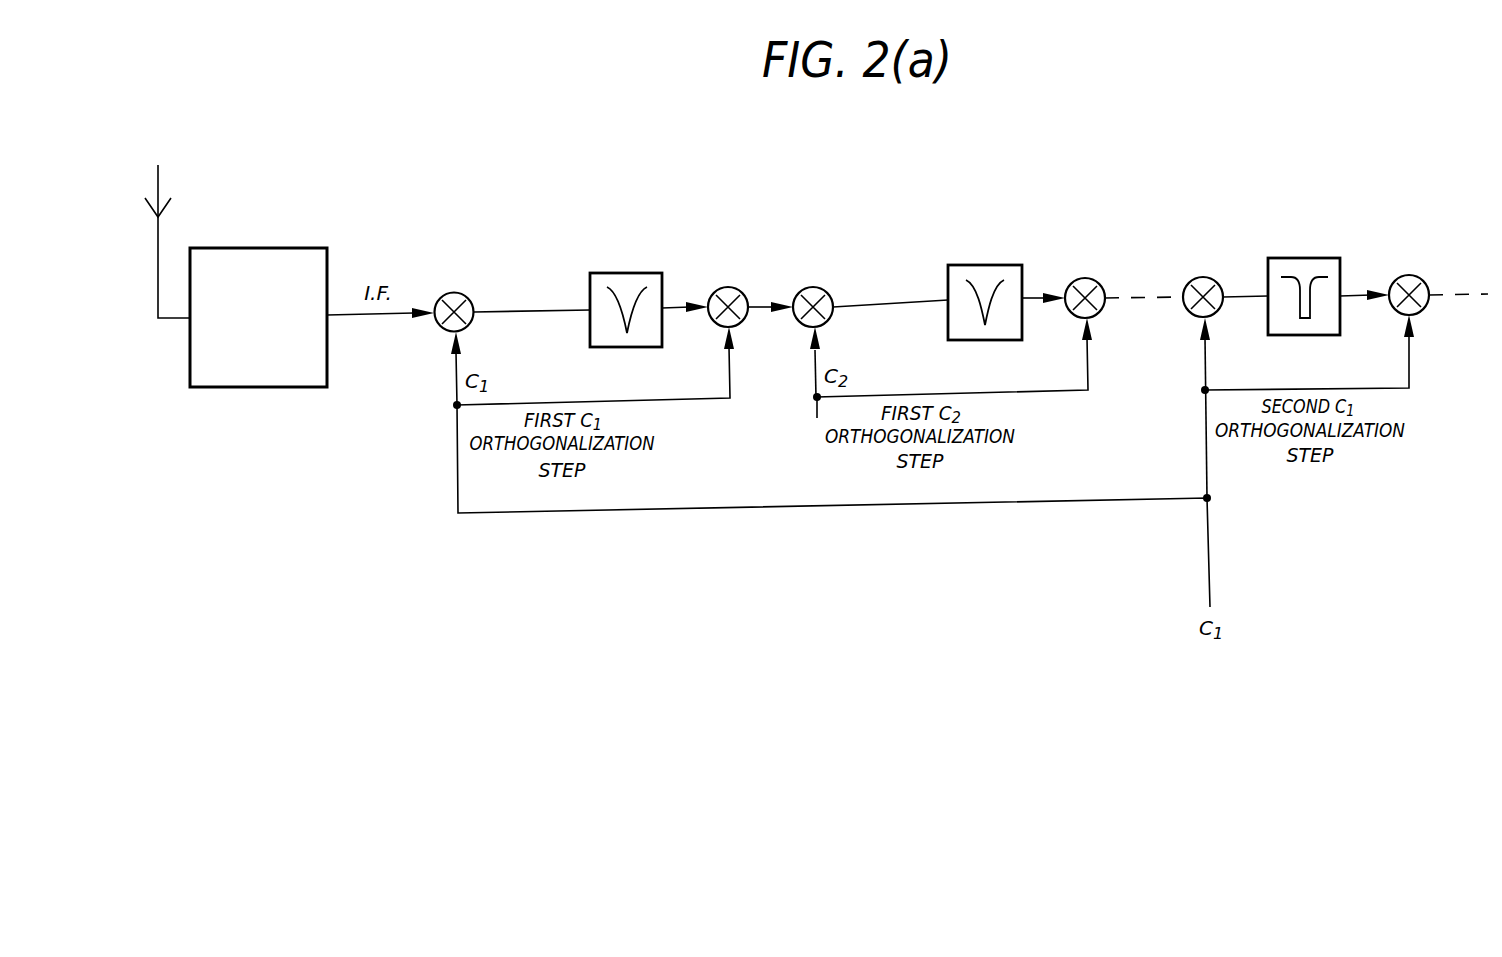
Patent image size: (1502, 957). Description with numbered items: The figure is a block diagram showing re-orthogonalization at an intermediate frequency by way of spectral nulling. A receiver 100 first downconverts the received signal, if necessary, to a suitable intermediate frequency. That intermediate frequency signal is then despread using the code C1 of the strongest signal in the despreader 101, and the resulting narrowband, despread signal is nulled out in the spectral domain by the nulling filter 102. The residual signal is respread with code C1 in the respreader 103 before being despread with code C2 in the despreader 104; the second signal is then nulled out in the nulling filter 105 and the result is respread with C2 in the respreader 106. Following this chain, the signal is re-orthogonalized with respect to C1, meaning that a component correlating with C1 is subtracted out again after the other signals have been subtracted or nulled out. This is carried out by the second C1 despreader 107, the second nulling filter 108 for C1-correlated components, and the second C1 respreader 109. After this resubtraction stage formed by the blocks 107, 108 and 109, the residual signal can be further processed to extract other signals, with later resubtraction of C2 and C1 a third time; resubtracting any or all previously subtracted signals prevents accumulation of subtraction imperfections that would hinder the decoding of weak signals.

The receiver 100 is at (257, 248).
The despreader 101 is at (455, 292).
The nulling filter 102 is at (625, 273).
The respreader 103 is at (728, 285).
The despreader 104 is at (813, 285).
The nulling filter 105 is at (985, 265).
The respreader 106 is at (1085, 278).
The second C1 despreader 107 is at (1204, 277).
The second nulling filter 108 is at (1304, 258).
The second C1 respreader 109 is at (1408, 274).